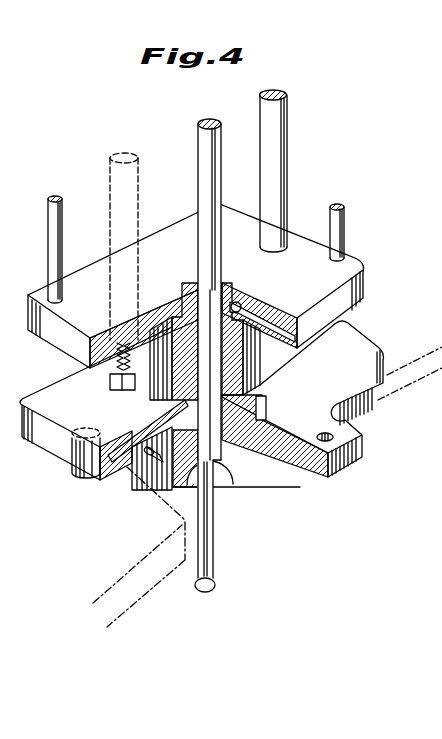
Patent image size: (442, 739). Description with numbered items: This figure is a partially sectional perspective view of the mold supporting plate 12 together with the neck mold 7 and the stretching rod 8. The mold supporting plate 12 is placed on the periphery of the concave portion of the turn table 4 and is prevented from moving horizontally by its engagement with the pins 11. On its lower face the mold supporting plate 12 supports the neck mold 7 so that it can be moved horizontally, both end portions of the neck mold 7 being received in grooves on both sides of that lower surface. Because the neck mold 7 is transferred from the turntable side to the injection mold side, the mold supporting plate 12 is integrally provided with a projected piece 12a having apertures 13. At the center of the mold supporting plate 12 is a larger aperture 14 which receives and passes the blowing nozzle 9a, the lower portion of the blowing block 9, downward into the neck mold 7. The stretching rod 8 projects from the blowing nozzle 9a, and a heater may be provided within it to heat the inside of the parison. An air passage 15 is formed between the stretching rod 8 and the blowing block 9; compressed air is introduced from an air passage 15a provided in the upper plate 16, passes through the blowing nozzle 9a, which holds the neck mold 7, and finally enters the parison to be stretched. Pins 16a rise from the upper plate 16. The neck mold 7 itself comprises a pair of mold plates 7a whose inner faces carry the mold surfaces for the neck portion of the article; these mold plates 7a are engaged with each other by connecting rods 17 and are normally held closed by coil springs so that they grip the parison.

The turn table 4 is at (143, 577).
The neck mold 7 is at (243, 472).
The mold plates 7a is at (110, 478).
The stretching rod 8 is at (210, 140).
The blowing block 9 is at (232, 362).
The blowing nozzle 9a is at (223, 487).
The pins 11 is at (80, 475).
The mold supporting plate 12 is at (67, 385).
The projected piece 12a is at (356, 434).
The apertures 13 is at (355, 440).
The larger aperture 14 is at (233, 410).
The air passage 15 is at (153, 412).
The air passage 15a is at (265, 324).
The upper plate 16 is at (187, 228).
The guide pins 16a is at (117, 175).
The connecting rods 17 is at (153, 468).